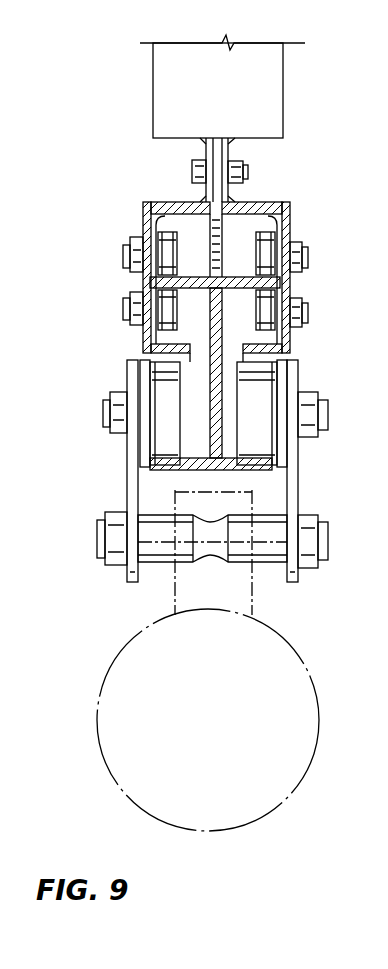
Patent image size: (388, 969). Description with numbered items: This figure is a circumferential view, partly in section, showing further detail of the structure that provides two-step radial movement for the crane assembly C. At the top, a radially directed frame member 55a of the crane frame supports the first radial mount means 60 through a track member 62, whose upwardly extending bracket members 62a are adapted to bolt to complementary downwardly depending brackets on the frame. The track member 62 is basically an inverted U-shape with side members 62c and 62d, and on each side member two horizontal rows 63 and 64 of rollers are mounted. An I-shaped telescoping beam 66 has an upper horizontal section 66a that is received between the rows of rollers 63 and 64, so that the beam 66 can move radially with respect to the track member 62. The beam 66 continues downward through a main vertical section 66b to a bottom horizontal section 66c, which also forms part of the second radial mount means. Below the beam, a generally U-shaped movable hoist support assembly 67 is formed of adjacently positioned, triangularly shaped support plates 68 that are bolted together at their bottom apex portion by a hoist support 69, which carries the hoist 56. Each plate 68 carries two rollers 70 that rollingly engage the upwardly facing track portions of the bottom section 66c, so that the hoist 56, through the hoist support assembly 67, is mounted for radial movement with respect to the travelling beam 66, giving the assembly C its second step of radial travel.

The crane assembly C is at (141, 159).
The radially directed frame members 55a is at (240, 98).
The hoist 56 is at (307, 668).
The first radial mount means 60 is at (332, 171).
The track member 62 is at (287, 215).
The upwardly extending bracket members 62a is at (220, 170).
The side member 62c is at (143, 278).
The side member 62d is at (279, 283).
The horizontal row of rollers 63 is at (305, 312).
The horizontal row of rollers 64 is at (277, 257).
The telescoping beam 66 is at (223, 363).
The upper horizontal section 66a is at (197, 272).
The main vertical section 66b is at (209, 365).
The bottom horizontal section 66c is at (160, 474).
The hoist support assembly 67 is at (299, 500).
The support plates 68 is at (131, 496).
The hoist support 69 is at (158, 552).
The rollers 70 is at (157, 398).